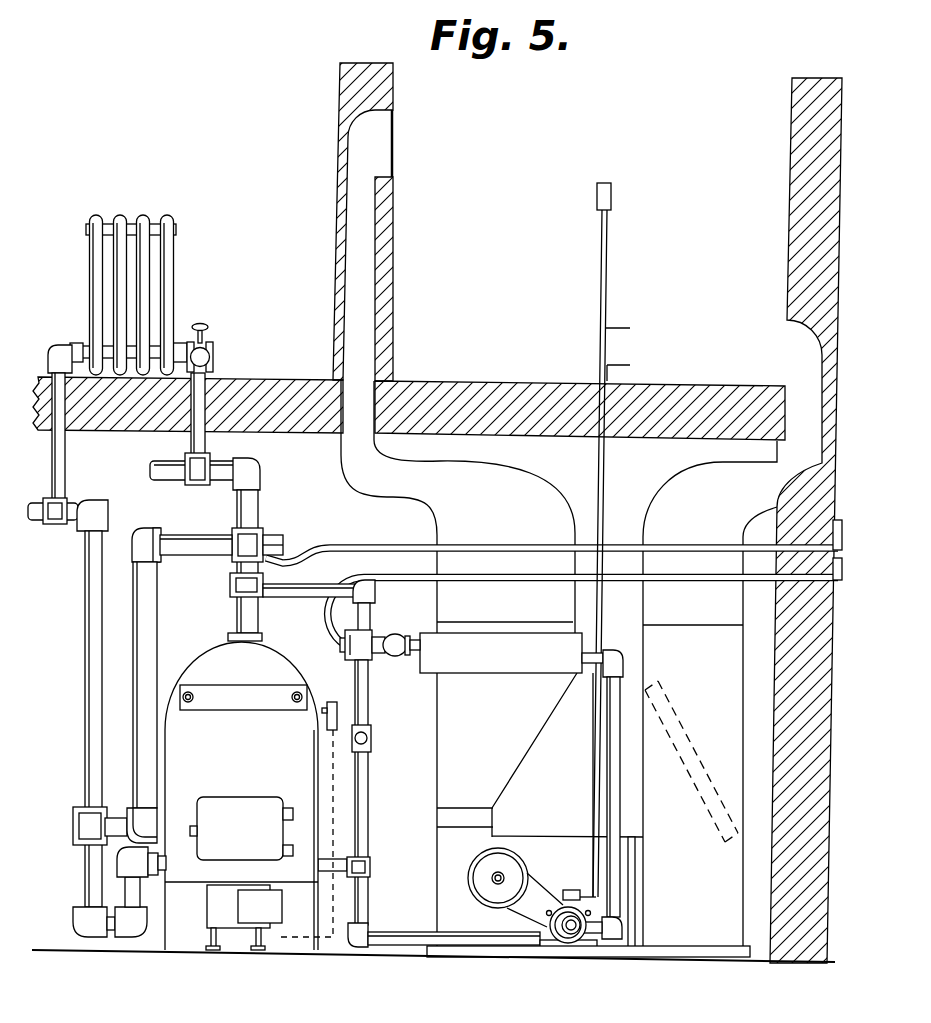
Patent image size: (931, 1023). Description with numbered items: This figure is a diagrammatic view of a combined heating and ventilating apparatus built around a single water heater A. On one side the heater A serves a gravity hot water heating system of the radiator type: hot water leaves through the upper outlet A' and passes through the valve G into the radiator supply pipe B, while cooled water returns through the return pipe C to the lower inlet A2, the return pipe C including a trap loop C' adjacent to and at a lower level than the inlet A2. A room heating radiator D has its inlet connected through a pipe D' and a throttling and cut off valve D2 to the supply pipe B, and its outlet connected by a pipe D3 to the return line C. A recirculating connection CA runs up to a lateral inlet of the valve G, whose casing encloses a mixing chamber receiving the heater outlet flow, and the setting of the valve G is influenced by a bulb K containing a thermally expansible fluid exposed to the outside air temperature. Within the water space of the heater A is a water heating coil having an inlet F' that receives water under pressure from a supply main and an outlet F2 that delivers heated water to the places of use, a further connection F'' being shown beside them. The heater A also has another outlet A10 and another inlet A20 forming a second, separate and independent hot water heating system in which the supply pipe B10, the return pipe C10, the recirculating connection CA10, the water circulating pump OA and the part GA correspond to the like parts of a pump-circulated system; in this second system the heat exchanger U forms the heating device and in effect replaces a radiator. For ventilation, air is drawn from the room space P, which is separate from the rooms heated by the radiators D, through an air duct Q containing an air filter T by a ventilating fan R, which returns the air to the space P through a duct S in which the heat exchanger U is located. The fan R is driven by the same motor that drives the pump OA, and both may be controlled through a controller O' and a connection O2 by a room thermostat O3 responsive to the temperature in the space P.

The radiator D is at (138, 295).
The throttling and cut off valve D2 is at (211, 352).
The radiator inlet pipe D' is at (229, 401).
The radiator outlet pipe D3 is at (63, 466).
The radiator supply pipe B is at (165, 462).
The valve G is at (253, 540).
The return pipe C is at (77, 702).
The recirculating connection CA is at (141, 675).
The upper heater outlet A' is at (228, 596).
The second heater outlet A10 is at (285, 597).
The supply pipe of second system B10 is at (404, 637).
The corresponding part GA is at (371, 661).
The coil outlet F2 is at (191, 692).
The coil inlet F' is at (243, 681).
The bolt F'' is at (285, 680).
The water heater A is at (251, 791).
The lower heater inlet A2 is at (161, 855).
The trap loop C' is at (98, 892).
The second heater inlet A20 is at (349, 871).
The recirculating connection of second system CA10 is at (366, 808).
The ventilating fan R is at (506, 883).
The controller O' is at (578, 879).
The connection O2 is at (596, 743).
The room thermostat O3 is at (612, 195).
The water circulating pump OA is at (566, 955).
The return pipe of second system C10 is at (622, 803).
The air filter T is at (687, 722).
The bulb for thermally expansible fluid K is at (844, 537).
The air duct Q is at (710, 695).
The room space P is at (519, 250).
The return duct S is at (454, 506).
The heat exchanger U is at (501, 653).